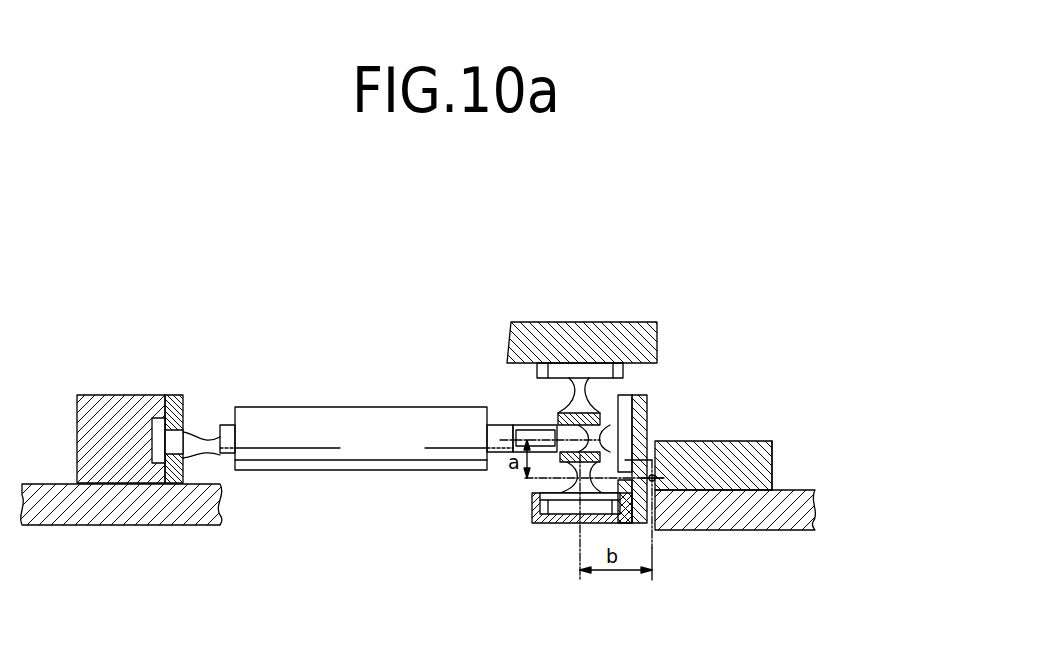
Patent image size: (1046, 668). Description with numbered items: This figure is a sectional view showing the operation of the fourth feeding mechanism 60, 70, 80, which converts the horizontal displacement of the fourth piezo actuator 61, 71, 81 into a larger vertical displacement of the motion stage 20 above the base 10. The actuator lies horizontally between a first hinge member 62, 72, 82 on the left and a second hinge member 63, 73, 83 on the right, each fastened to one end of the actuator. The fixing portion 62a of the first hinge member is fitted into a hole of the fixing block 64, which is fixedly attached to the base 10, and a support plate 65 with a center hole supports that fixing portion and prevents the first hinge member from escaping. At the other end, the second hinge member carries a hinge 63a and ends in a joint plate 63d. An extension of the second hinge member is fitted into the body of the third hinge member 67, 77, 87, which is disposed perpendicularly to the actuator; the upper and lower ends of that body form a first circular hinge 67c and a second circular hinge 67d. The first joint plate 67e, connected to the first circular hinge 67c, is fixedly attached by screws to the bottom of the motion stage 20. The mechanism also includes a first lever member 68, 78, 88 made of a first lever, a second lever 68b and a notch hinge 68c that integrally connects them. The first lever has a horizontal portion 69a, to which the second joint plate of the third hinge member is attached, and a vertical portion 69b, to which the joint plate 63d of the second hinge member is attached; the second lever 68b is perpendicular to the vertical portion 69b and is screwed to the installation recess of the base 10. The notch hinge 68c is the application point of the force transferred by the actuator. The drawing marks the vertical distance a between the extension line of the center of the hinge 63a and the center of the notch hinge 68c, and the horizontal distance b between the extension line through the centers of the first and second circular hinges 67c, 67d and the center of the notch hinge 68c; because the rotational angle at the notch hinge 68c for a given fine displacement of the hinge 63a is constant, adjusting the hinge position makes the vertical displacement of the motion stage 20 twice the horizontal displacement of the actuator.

The base 10 is at (97, 504).
The motion stage 20 is at (538, 322).
The fourth feeding mechanism 60 is at (457, 414).
The actuator unit (second embodiment) 70 is at (457, 414).
The actuator unit (third embodiment) 80 is at (366, 392).
The fourth piezo actuator 61 is at (361, 498).
The actuator body (second embodiment) 71 is at (361, 498).
The actuator body (third embodiment) 81 is at (321, 456).
The first hinge member 62 is at (256, 369).
The connecting member (second embodiment) 72 is at (256, 369).
The connecting member (third embodiment) 82 is at (230, 405).
The fixing portion 62a is at (213, 436).
The second hinge member 63 is at (552, 452).
The operating rod (second embodiment) 73 is at (552, 452).
The operating rod (third embodiment) 83 is at (494, 467).
The hinge 63a is at (598, 435).
The joint plate 63d is at (627, 460).
The fixing block 64 is at (103, 395).
The support plate 65 is at (175, 395).
The third hinge member 67 is at (611, 404).
The support member (second embodiment) 77 is at (611, 404).
The support member (third embodiment) 87 is at (634, 372).
The first circular hinge 67c is at (577, 393).
The second circular hinge 67d is at (556, 518).
The first joint plate 67e is at (597, 372).
The first lever member 68 is at (767, 464).
The stopper block (second embodiment) 78 is at (767, 464).
The stopper block (third embodiment) 88 is at (782, 441).
The second lever 68b is at (772, 466).
The notch hinge 68c is at (656, 531).
The horizontal portion 69a is at (573, 526).
The vertical portion 69b is at (645, 402).